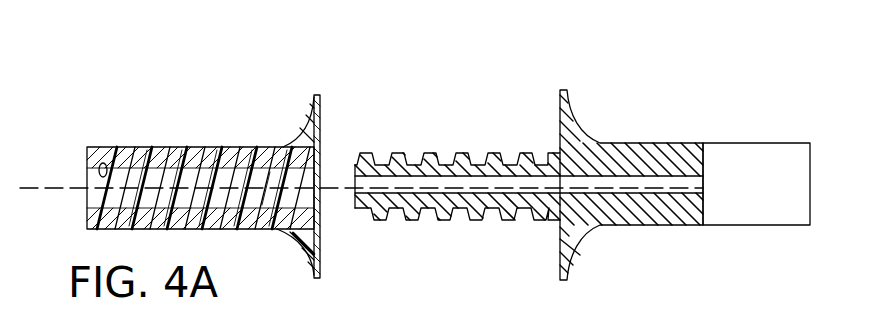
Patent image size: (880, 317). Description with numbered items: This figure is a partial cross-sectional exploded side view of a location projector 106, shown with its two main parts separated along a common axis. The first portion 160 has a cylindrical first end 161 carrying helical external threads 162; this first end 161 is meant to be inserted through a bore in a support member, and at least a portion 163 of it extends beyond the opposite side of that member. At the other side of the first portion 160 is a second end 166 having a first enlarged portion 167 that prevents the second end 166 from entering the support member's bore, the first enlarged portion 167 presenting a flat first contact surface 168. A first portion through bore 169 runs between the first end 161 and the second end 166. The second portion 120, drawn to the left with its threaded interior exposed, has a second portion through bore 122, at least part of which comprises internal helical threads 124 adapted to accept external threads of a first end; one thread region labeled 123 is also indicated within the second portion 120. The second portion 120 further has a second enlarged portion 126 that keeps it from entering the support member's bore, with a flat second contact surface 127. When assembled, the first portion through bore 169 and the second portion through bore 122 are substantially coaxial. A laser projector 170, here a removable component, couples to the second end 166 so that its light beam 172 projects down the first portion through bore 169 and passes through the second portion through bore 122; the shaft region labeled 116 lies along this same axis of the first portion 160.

The location projector 106 is at (430, 83).
The shaft portion 116 is at (677, 224).
The second portion 120 is at (200, 155).
The second portion through bore 122 is at (106, 165).
The thread 123 is at (232, 168).
The internal helical threads 124 is at (272, 162).
The second enlarged portion 126 is at (303, 252).
The flat second contact surface 127 is at (309, 205).
The first portion 160 is at (522, 180).
The cylindrical first end 161 is at (355, 200).
The helical external threads 162 is at (404, 212).
The portion of the first end 163 is at (412, 162).
The second end 166 is at (620, 224).
The first enlarged portion 167 is at (572, 235).
The flat first contact surface 168 is at (562, 120).
The first portion through bore 169 is at (502, 187).
The laser projector 170 is at (757, 155).
The light beam 172 is at (335, 187).